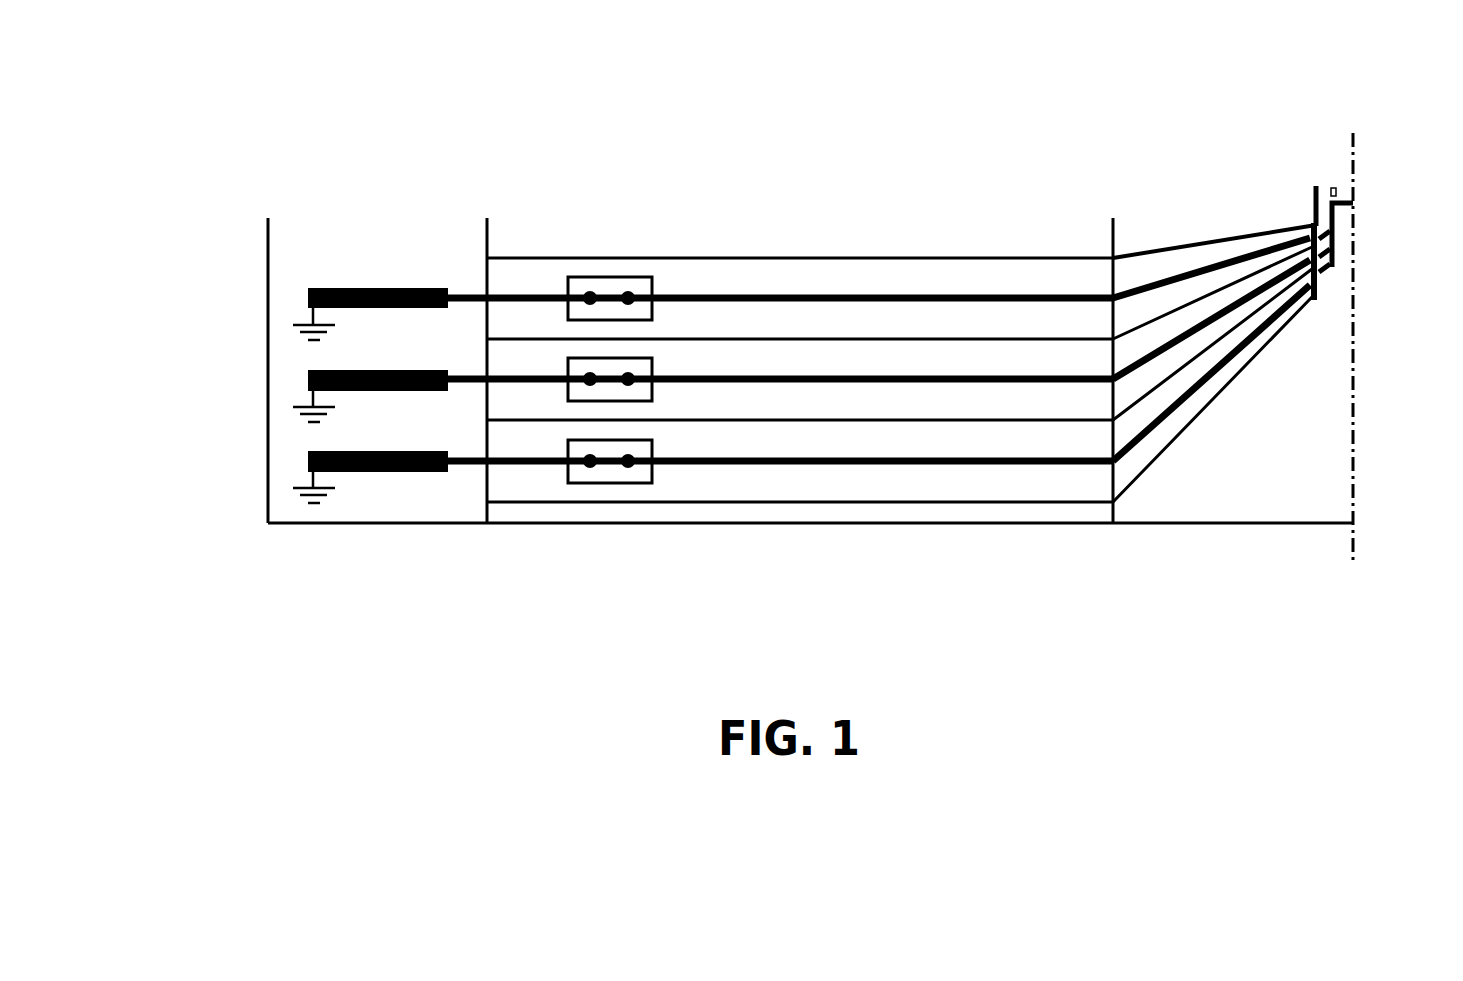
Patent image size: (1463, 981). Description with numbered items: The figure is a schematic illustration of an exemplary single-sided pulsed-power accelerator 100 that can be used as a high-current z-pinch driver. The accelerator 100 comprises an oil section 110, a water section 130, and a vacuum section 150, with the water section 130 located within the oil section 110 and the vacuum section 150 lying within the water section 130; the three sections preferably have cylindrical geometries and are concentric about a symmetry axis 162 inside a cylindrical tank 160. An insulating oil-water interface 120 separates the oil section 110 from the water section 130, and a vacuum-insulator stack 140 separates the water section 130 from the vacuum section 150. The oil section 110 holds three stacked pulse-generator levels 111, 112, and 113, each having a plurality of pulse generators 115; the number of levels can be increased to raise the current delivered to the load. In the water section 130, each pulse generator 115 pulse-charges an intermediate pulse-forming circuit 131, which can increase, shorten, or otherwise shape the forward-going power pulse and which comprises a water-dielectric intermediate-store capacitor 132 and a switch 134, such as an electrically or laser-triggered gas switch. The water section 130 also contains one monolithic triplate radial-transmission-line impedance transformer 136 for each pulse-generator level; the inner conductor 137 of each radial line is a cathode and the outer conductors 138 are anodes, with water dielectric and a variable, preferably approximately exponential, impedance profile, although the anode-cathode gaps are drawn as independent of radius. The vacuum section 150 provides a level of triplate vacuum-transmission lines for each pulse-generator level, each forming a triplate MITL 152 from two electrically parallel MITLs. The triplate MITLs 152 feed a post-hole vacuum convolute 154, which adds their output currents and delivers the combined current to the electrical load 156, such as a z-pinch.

The single-sided pulsed-power accelerator 100 is at (506, 26).
The oil section 110 is at (276, 548).
The pulse-generator level 111 is at (252, 462).
The pulse-generator level 112 is at (252, 383).
The pulse-generator level 113 is at (252, 302).
The pulse generators 115 is at (367, 288).
The insulating oil-water interface 120 is at (484, 238).
The water section 130 is at (497, 548).
The intermediate pulse-forming circuit 131 is at (490, 190).
The water-dielectric intermediate-store capacitors 132 is at (532, 275).
The switches 134 is at (607, 277).
The monolithic triplate radial-transmission-line impedance transformer 136 is at (913, 278).
The inner conductor 137 is at (752, 295).
The outer conductors 138 is at (752, 255).
The vacuum-insulator stack 140 is at (1110, 226).
The vacuum section 150 is at (1120, 548).
The triplate MITL 152 is at (1225, 250).
The post-hole vacuum convolute 154 is at (1317, 185).
The electrical load 156 is at (1360, 188).
The cylindrical tank 160 is at (266, 225).
The symmetry axis 162 is at (1355, 312).